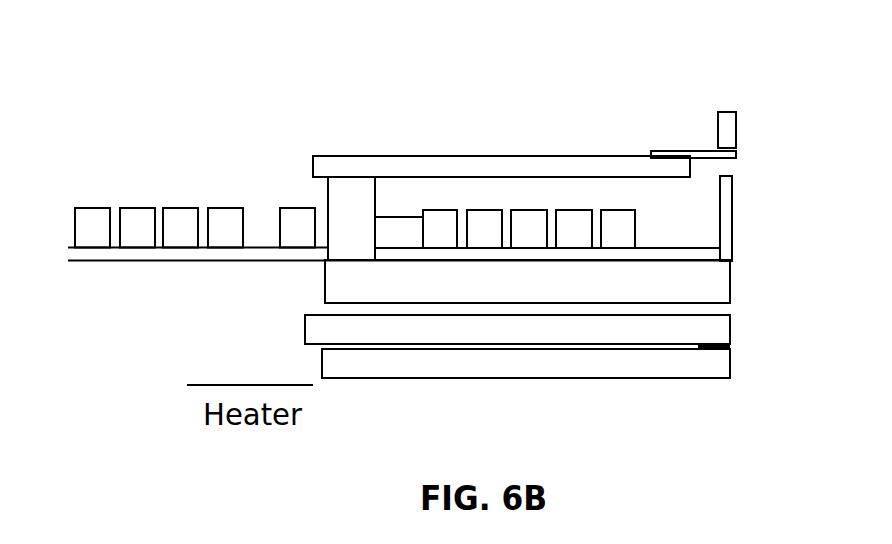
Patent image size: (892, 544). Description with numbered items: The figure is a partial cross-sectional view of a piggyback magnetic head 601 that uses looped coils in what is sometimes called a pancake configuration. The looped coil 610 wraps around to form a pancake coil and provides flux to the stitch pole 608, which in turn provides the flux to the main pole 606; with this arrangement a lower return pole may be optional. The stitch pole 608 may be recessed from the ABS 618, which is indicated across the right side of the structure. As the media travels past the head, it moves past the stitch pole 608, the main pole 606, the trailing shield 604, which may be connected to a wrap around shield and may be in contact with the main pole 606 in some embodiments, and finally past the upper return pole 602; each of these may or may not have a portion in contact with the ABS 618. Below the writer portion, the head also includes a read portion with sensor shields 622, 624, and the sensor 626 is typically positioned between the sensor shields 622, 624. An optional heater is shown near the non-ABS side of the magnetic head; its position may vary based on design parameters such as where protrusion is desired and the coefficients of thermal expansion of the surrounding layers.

The piggyback magnetic head 601 is at (358, 85).
The upper return pole 602 is at (737, 128).
The trailing shield 604 is at (733, 225).
The main pole 606 is at (695, 151).
The stitch pole 608 is at (533, 156).
The looped coil 610 is at (612, 210).
The air bearing surface (ABS) 618 is at (740, 280).
The sensor shield 622 is at (305, 329).
The sensor shield 624 is at (322, 360).
The sensor 626 is at (700, 343).